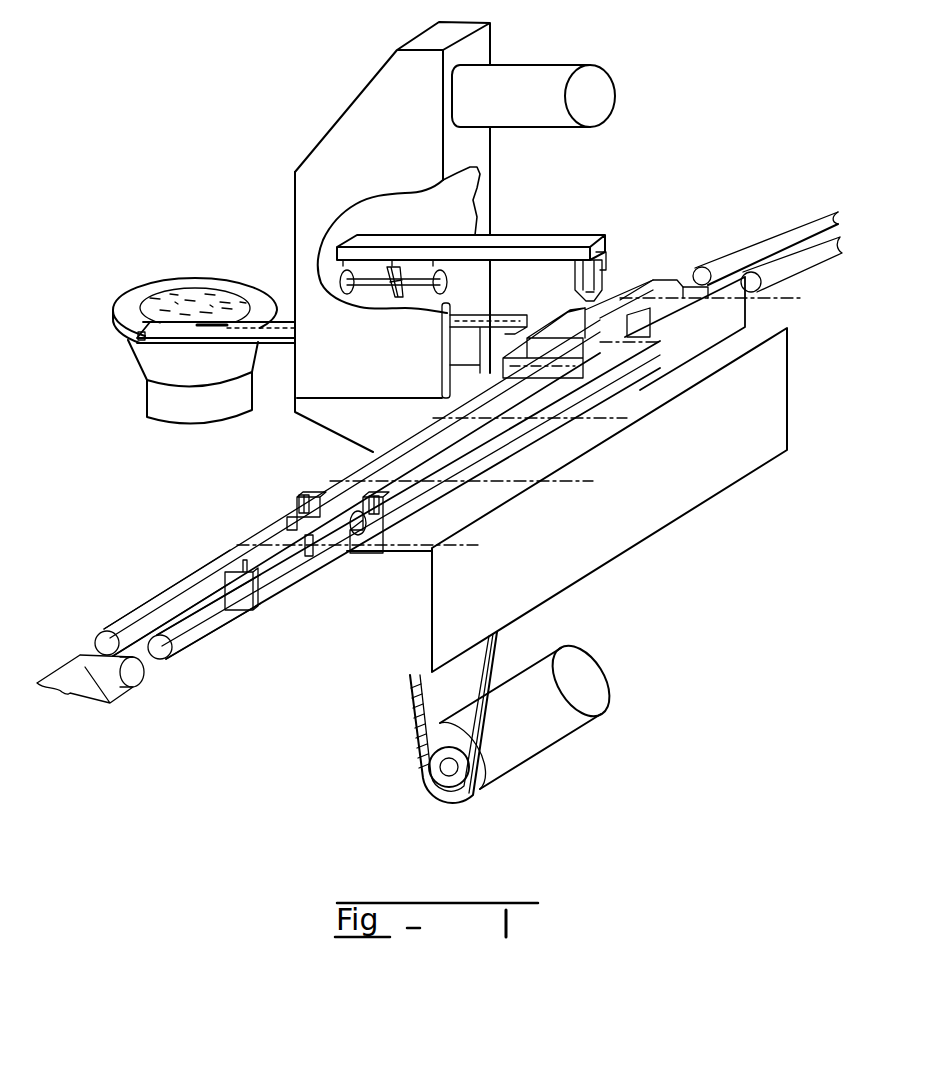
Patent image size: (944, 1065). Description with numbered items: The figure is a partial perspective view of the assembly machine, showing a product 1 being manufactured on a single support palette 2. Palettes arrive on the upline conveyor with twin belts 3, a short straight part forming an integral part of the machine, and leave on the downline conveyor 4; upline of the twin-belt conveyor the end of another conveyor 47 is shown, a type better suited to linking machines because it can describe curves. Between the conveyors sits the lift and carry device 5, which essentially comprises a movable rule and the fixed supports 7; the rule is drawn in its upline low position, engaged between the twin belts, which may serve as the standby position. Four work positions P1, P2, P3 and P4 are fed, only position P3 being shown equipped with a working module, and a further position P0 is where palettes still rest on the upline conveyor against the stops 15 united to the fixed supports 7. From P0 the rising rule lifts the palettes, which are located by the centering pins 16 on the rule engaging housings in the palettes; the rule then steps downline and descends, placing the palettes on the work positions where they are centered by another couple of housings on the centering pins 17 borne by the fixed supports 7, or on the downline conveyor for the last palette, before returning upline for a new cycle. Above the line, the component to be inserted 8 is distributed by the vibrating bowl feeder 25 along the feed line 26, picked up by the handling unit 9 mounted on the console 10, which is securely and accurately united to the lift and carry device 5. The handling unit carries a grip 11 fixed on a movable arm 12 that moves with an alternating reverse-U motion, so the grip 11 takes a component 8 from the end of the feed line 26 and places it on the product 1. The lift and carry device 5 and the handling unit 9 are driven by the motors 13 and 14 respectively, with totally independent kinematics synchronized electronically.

The product 1 is at (643, 279).
The support palette 2 is at (630, 338).
The upline conveyor twin belt 3 is at (160, 594).
The downline conveyor 4 is at (768, 217).
The lift and carry device 5 is at (757, 417).
The fixed support 7 is at (365, 463).
The component to be inserted 8 is at (607, 288).
The handling unit 9 is at (358, 128).
The console 10 is at (342, 416).
The grip 11 is at (606, 266).
The movable arm 12 is at (517, 234).
The motor 13 is at (543, 720).
The motor 14 is at (515, 70).
The stop 15 is at (290, 510).
The centering pin 16 is at (258, 612).
The centering pin 17 is at (300, 492).
The vibrating bowl feeder 25 is at (192, 277).
The feed line 26 is at (467, 337).
The conveyor 47 is at (110, 703).
The position P0 is at (373, 541).
The work position P1 is at (478, 480).
The work position P2 is at (530, 403).
The work position P3 is at (646, 341).
The work position P4 is at (727, 293).